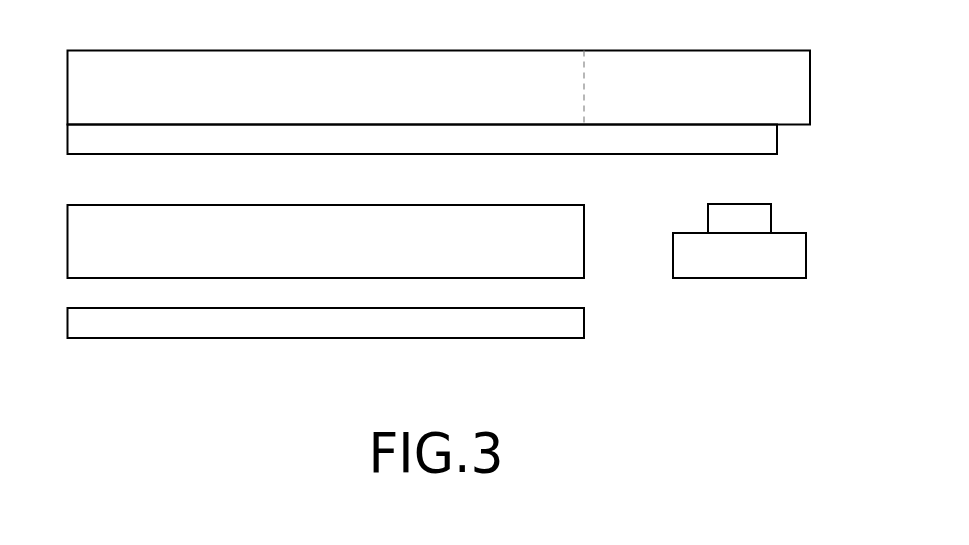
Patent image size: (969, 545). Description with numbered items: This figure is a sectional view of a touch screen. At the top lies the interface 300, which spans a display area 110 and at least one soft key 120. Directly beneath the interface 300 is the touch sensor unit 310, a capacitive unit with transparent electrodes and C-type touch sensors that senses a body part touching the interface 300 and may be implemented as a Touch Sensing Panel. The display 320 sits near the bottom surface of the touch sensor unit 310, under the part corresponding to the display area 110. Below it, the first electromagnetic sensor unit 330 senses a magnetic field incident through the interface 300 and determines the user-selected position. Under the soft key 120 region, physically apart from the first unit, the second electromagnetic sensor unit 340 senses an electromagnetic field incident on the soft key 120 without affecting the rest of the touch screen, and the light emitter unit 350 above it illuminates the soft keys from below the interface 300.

The display area 110 is at (584, 41).
The soft key 120 is at (809, 42).
The interface 300 is at (810, 87).
The touch sensor unit 310 is at (777, 147).
The display 320 is at (584, 240).
The first electromagnetic sensor unit 330 is at (584, 322).
The second electromagnetic sensor unit 340 is at (806, 258).
The light emitter unit 350 is at (771, 211).